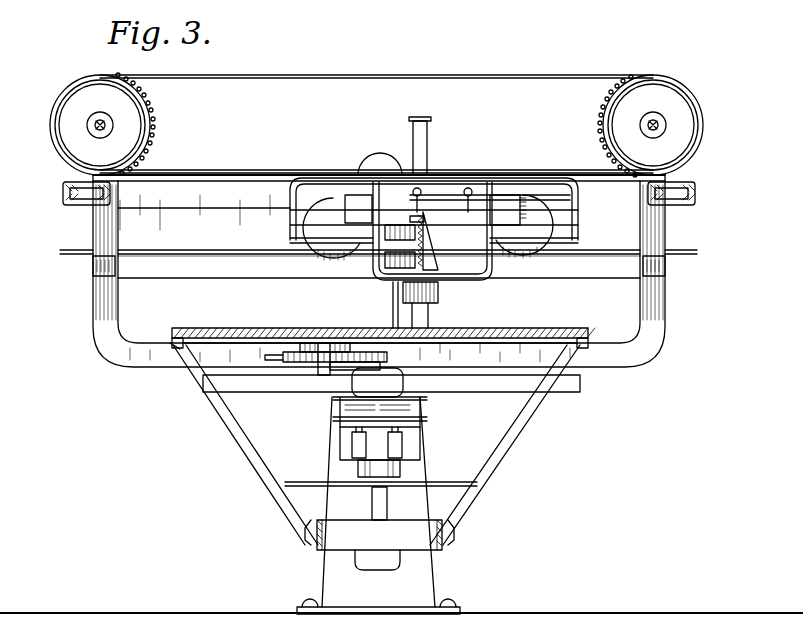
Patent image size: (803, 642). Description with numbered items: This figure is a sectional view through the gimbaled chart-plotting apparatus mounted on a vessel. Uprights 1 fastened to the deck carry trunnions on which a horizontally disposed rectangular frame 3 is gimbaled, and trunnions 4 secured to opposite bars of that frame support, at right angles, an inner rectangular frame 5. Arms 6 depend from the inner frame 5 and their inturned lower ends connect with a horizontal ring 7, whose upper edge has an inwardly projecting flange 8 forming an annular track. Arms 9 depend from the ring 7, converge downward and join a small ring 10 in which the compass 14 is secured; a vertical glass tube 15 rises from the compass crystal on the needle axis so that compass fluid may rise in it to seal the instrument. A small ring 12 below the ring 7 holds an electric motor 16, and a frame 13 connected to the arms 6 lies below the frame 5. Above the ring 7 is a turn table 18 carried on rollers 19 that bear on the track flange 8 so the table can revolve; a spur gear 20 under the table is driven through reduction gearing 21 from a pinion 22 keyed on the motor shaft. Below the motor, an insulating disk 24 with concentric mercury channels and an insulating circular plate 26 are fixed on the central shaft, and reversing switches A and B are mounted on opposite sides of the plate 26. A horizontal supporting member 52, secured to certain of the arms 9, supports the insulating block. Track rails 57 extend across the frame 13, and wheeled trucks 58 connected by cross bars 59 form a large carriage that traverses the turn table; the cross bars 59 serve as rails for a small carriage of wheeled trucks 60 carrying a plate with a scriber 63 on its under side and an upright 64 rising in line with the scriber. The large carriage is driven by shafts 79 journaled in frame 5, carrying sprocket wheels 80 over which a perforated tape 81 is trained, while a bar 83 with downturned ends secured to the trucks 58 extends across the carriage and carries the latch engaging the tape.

The upright 1 is at (415, 592).
The rectangular frame 3 is at (55, 230).
The trunnion 4 is at (74, 230).
The rectangular frame 5 is at (176, 195).
The arm 6 is at (100, 305).
The ring 7 is at (178, 352).
The flange 8 is at (195, 340).
The arm 9 is at (237, 455).
The ring 10 is at (502, 555).
The ring 12 is at (338, 400).
The frame 13 is at (182, 315).
The compass 14 is at (376, 545).
The glass tube 15 is at (386, 504).
The electric motor 16 is at (377, 382).
The turn table 18 is at (350, 328).
The roller 19 is at (182, 336).
The spur gear 20 is at (465, 328).
The reduction gearing 21 is at (325, 340).
The pinion 22 is at (390, 358).
The disk 24 is at (427, 428).
The circular plate 26 is at (425, 460).
The supporting member 52 is at (305, 472).
The track rail 57 is at (185, 256).
The wheeled truck 58 is at (434, 210).
The cross bar 59 is at (336, 252).
The wheeled truck 60 is at (505, 200).
The scriber 63 is at (432, 320).
The upright 64 is at (470, 274).
The shaft 79 is at (112, 126).
The sprocket wheel 80 is at (125, 147).
The tape 81 is at (300, 74).
The bar 83 is at (427, 164).
The reversing switch A is at (352, 446).
The reversing switch B is at (420, 446).